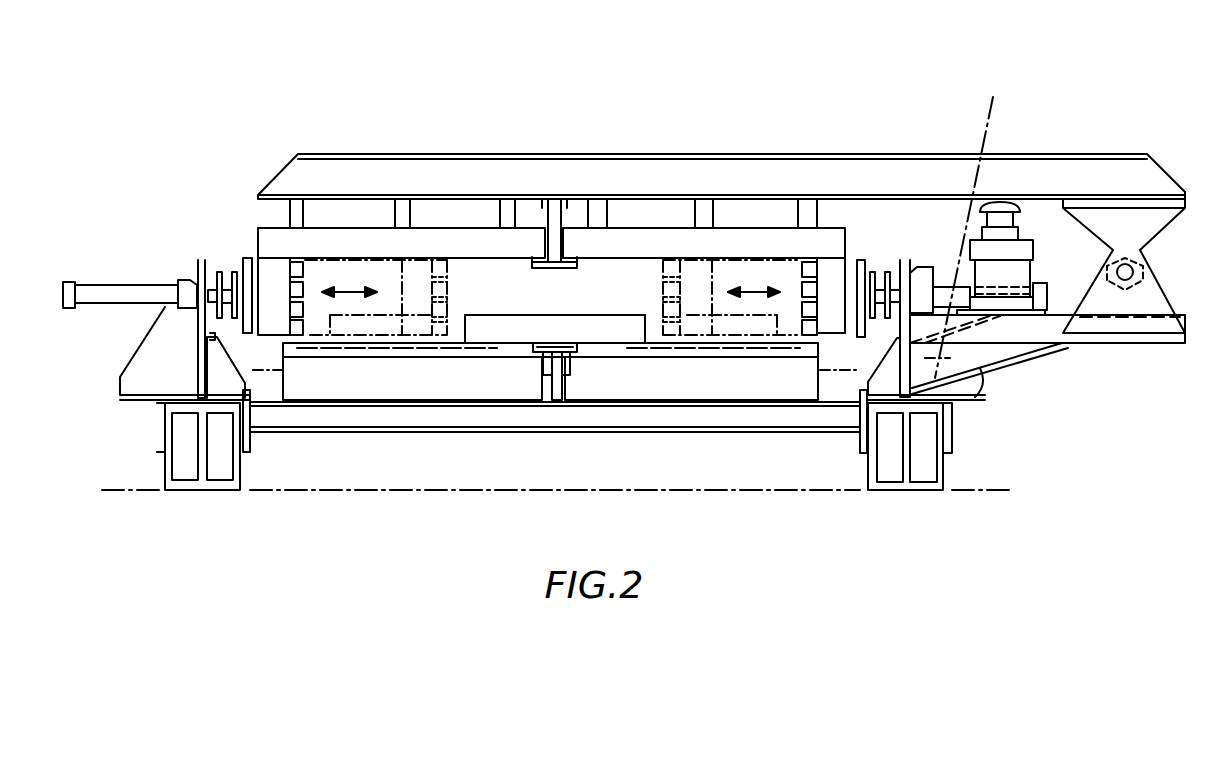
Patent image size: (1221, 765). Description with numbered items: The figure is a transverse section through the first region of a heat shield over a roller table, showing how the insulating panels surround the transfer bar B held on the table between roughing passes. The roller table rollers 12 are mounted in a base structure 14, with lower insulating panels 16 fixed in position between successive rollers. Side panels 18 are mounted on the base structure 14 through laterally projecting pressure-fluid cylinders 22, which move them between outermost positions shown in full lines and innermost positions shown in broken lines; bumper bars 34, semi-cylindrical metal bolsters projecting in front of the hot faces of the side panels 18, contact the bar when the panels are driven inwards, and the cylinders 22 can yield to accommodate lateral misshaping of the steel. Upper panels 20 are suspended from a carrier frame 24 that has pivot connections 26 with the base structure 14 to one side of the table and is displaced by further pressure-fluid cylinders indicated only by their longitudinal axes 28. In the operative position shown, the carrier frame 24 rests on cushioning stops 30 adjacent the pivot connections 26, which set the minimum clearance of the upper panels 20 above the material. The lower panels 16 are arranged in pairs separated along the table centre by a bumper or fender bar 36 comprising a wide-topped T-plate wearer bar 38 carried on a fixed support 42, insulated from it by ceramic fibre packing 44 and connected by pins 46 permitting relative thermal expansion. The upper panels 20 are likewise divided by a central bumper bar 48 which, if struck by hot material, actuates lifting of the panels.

The roller table rollers 12 is at (497, 352).
The base structure 14 is at (946, 470).
The lower insulating panels 16 is at (408, 383).
The side panels 18 is at (273, 283).
The upper panels 20 is at (357, 245).
The pressure-fluid cylinders 22 is at (135, 293).
The carrier frame 24 is at (465, 188).
The pivot connections 26 is at (1133, 265).
The longitudinal axes of pressure-fluid cylinders 28 is at (987, 123).
The cushioning stops 30 is at (1020, 252).
The bumper bars 34 is at (298, 312).
The bumper or fender bar 36 is at (568, 343).
The T-plate wearer bar 38 is at (541, 343).
The fixed support 42 is at (557, 387).
The ceramic fibre packing 44 is at (543, 363).
The pins 46 is at (565, 367).
The central bumper bar 48 is at (566, 258).
The transfer bar B is at (496, 313).